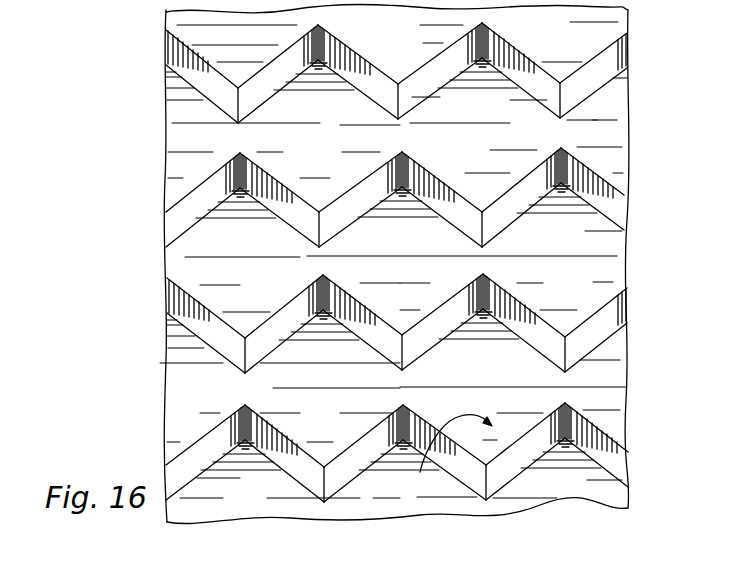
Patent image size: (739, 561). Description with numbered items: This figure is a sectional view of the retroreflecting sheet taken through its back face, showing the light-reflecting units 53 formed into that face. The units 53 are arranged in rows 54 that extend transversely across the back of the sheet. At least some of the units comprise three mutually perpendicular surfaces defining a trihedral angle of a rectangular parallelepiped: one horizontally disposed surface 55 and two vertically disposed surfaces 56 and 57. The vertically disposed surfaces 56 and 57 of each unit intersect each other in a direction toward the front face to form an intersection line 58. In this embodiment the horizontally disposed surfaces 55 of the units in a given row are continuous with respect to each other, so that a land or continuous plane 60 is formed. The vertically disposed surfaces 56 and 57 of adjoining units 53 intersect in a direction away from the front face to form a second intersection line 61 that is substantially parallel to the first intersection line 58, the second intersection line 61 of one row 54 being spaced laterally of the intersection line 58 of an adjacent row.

The light-reflecting units 53 is at (444, 458).
The rows of light-reflecting units 54 is at (163, 240).
The horizontally disposed surface 55 is at (326, 165).
The vertically disposed surface 56 is at (433, 78).
The vertically disposed surface 57 is at (363, 82).
The intersection line 58 is at (400, 118).
The land 60 is at (607, 124).
The second intersection line 61 is at (493, 52).